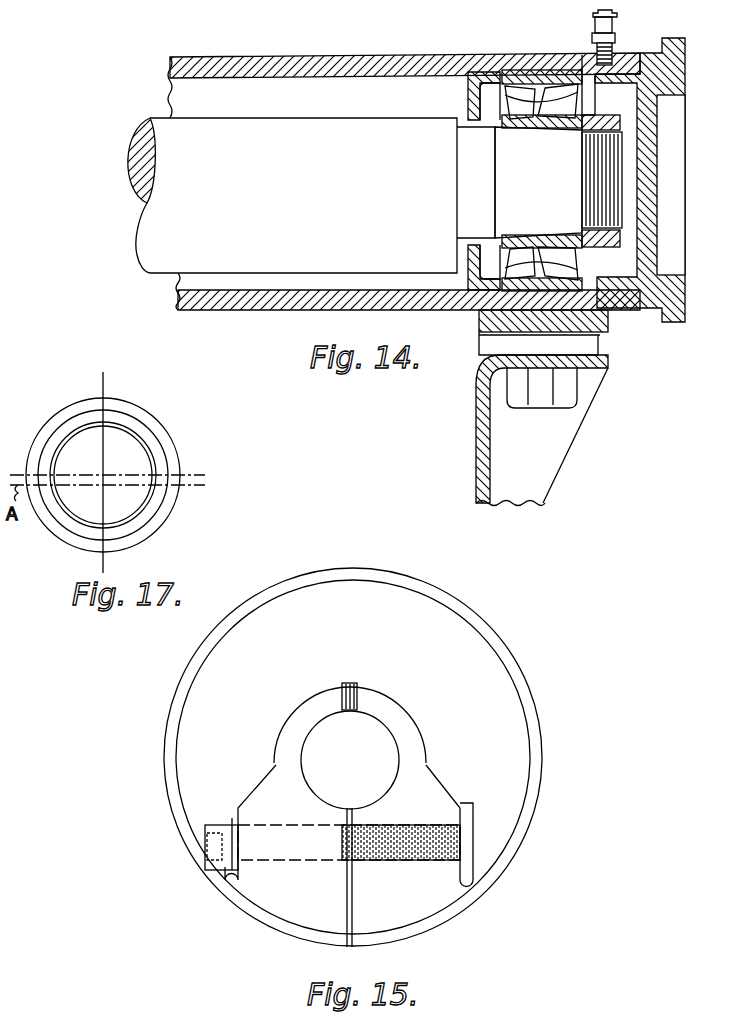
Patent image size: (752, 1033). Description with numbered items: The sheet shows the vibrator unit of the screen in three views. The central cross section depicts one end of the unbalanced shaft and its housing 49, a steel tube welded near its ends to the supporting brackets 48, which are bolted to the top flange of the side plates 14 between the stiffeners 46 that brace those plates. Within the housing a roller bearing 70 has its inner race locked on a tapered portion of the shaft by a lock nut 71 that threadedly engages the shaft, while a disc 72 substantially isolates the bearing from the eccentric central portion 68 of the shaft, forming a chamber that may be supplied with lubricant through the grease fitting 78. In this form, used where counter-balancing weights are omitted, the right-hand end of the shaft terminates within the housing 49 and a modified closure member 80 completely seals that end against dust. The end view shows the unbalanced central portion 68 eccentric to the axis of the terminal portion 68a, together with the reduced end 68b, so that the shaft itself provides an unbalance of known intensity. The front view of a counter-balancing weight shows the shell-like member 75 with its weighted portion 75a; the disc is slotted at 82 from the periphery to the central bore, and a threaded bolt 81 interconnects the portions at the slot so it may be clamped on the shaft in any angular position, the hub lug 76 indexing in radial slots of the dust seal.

In FIG. 14, the side plate 14 is at (478, 443).
In FIG. 14, the stiffener 46 is at (560, 442).
In FIG. 14, the supporting bracket 48 is at (600, 320).
In FIG. 14, the housing 49 is at (373, 57).
In FIG. 14, the central portion of the vibrator shaft 68 is at (311, 195).
In FIG. 17, the central portion of the vibrator shaft 68 is at (150, 418).
In FIG. 17, the terminal portion of the shaft 68a is at (147, 468).
In FIG. 14, the reduced shaft end 68b is at (558, 182).
In FIG. 17, the reduced shaft end 68b is at (160, 503).
In FIG. 14, the roller bearing 70 is at (537, 72).
In FIG. 14, the lock nut 71 is at (630, 104).
In FIG. 14, the disc 72 is at (468, 97).
In FIG. 15, the shell like member 75 is at (510, 668).
In FIG. 15, the weighted portion 75a is at (453, 807).
In FIG. 15, the projecting lug 76 is at (357, 684).
In FIG. 14, the grease fitting 78 is at (615, 13).
In FIG. 14, the closure member 80 is at (676, 123).
In FIG. 15, the threaded bolt 81 is at (223, 870).
In FIG. 15, the slot 82 is at (352, 908).